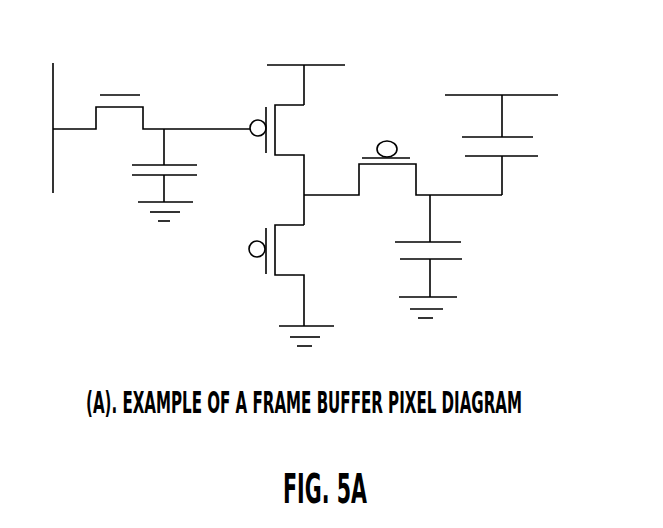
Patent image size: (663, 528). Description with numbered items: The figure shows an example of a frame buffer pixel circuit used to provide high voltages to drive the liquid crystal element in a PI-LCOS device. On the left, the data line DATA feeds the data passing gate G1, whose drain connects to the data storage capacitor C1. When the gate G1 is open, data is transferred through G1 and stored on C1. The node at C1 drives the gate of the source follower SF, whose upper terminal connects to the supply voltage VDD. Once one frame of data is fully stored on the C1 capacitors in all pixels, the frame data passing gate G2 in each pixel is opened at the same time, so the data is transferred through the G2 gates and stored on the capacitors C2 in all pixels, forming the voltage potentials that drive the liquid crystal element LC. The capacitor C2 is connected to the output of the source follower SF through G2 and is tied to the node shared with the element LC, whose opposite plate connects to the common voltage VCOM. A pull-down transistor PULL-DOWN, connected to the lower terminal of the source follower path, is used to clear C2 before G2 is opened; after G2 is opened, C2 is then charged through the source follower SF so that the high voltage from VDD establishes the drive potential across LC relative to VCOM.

The data line DATA is at (57, 112).
The data passing gate G1 is at (121, 95).
The data storage capacitor C1 is at (142, 175).
The supply voltage VDD is at (306, 63).
The source follower SF is at (257, 158).
The pull-down transistor PULL-DOWN is at (249, 249).
The frame data passing gate G2 is at (387, 141).
The common voltage VCOM is at (501, 92).
The LC element LC is at (513, 163).
The capacitor C2 is at (446, 256).